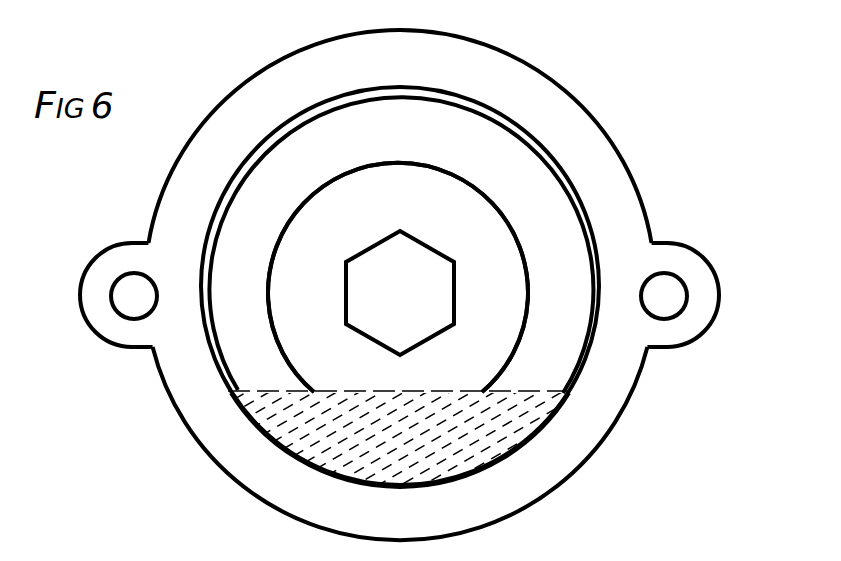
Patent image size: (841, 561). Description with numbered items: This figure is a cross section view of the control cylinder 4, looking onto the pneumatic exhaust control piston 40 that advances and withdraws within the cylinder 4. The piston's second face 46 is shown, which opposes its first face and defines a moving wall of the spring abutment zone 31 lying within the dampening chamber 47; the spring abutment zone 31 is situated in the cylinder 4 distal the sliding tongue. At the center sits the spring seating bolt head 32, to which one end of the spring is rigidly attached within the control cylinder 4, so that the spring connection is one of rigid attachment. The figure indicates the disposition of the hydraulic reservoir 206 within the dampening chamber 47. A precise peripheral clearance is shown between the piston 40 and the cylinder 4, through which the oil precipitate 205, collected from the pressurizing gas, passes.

The control cylinder 4 is at (463, 68).
The pneumatic exhaust control piston 40 is at (468, 143).
The second face 46 is at (513, 167).
The spring seating bolt head 32 is at (427, 268).
The dampening chamber 47 is at (553, 222).
The spring abutment zone 31 is at (500, 272).
The oil precipitate 205 is at (510, 412).
The hydraulic reservoir 206 is at (483, 448).